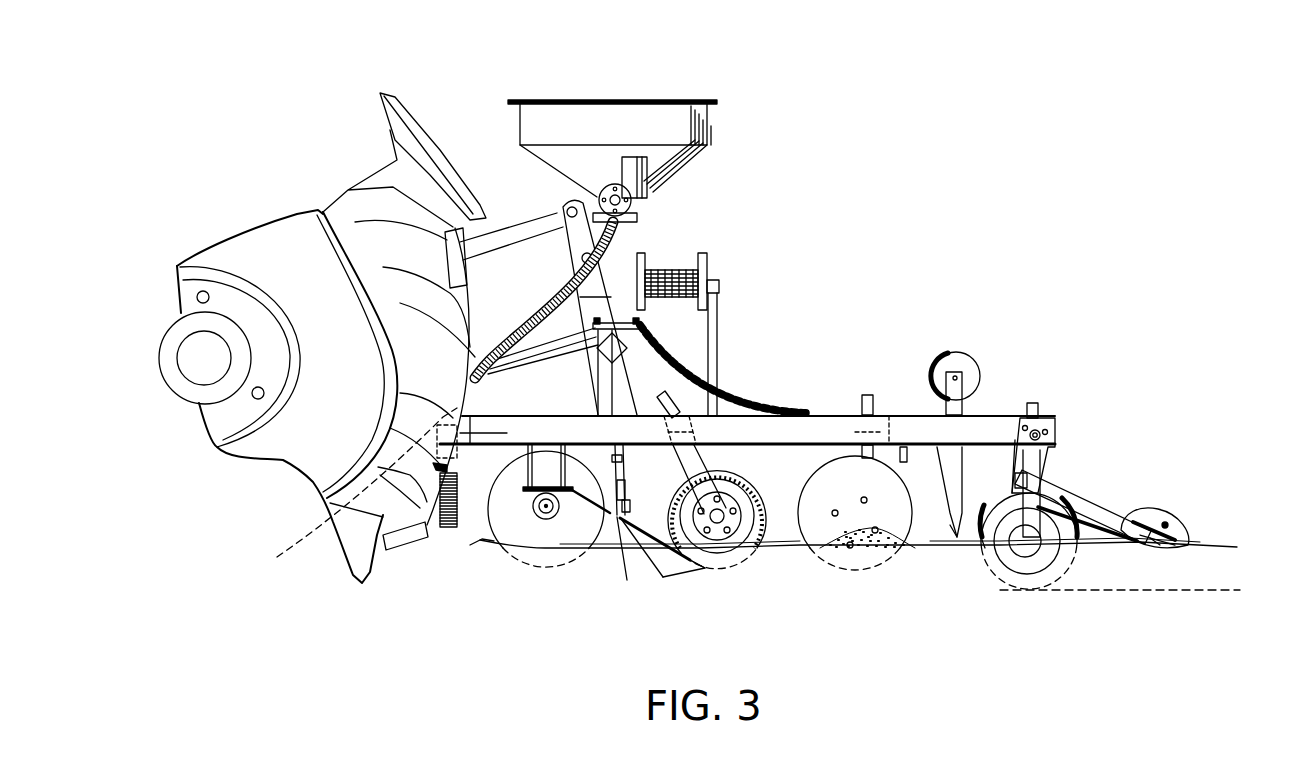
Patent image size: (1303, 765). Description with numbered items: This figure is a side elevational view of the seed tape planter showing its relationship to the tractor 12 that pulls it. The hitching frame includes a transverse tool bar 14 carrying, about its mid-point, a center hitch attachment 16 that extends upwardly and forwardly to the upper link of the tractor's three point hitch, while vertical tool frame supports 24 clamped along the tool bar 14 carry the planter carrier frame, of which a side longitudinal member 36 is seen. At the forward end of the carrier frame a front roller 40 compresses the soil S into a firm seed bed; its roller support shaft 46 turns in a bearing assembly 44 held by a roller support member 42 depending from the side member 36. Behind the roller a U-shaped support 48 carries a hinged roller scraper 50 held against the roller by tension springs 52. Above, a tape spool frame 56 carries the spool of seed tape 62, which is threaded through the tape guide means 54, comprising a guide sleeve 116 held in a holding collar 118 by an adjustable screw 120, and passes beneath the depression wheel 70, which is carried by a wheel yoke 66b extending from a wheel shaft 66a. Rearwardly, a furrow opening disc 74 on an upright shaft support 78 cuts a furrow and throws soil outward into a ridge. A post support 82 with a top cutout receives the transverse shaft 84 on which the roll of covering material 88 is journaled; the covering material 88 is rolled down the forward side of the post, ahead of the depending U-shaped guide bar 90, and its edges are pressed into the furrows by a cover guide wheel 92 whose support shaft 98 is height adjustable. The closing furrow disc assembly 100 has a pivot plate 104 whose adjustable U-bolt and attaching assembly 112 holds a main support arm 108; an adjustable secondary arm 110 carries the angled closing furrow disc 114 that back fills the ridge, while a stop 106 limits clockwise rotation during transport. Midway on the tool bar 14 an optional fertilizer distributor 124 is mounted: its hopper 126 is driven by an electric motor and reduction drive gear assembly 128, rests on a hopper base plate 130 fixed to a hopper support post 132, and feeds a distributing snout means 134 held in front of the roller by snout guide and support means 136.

The tractor 12 is at (342, 172).
The transverse tool bar 14 is at (597, 358).
The center hitch attachment 16 is at (570, 238).
The vertical tool frame support 24 is at (610, 372).
The side longitudinal member 36 is at (818, 424).
The front roller 40 is at (530, 545).
The roller support member 42 is at (543, 458).
The bearing assembly 44 is at (595, 515).
The roller support shaft 46 is at (560, 520).
The U-shaped support 48 is at (693, 545).
The roller scraper 50 is at (625, 532).
The tension spring 52 is at (620, 585).
The tape guide means 54 is at (665, 545).
The tape spool frame 56 is at (718, 288).
The seed tape 62 is at (706, 570).
The wheel shaft 66a is at (667, 397).
The wheel yoke 66b is at (700, 464).
The wheel 70 is at (736, 540).
The furrow opening disc 74 is at (826, 535).
The upright shaft support 78 is at (870, 393).
The post support 82 is at (957, 397).
The transverse shaft 84 is at (957, 380).
The covering material 88 is at (957, 352).
The U-shaped guide bar 90 is at (947, 547).
The cover guide wheel 92 is at (982, 533).
The support shaft 98 is at (1040, 407).
The closing furrow disc assembly 100 is at (1143, 482).
The pivot plate 104 is at (1043, 440).
The stop 106 is at (1015, 440).
The main support arm 108 is at (1077, 500).
The adjustable secondary arm 110 is at (1163, 507).
The adjustable U-bolt and attaching assembly 112 is at (1043, 540).
The closing furrow disc 114 is at (1175, 548).
The guide sleeve 116 is at (630, 512).
The holding collar 118 is at (625, 476).
The adjustable screw 120 is at (628, 494).
The fertilizer distributor assembly 124 is at (730, 145).
The hopper 126 is at (712, 112).
The electric motor and reduction drive gear assembly 128 is at (660, 187).
The hopper base plate 130 is at (630, 203).
The hopper support post 132 is at (623, 237).
The distributing snout means 134 is at (462, 546).
The snout guide and support means 136 is at (355, 495).
The soil S is at (486, 537).